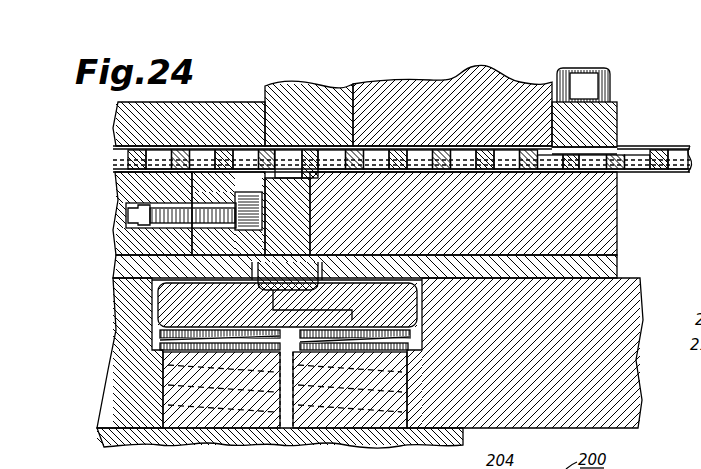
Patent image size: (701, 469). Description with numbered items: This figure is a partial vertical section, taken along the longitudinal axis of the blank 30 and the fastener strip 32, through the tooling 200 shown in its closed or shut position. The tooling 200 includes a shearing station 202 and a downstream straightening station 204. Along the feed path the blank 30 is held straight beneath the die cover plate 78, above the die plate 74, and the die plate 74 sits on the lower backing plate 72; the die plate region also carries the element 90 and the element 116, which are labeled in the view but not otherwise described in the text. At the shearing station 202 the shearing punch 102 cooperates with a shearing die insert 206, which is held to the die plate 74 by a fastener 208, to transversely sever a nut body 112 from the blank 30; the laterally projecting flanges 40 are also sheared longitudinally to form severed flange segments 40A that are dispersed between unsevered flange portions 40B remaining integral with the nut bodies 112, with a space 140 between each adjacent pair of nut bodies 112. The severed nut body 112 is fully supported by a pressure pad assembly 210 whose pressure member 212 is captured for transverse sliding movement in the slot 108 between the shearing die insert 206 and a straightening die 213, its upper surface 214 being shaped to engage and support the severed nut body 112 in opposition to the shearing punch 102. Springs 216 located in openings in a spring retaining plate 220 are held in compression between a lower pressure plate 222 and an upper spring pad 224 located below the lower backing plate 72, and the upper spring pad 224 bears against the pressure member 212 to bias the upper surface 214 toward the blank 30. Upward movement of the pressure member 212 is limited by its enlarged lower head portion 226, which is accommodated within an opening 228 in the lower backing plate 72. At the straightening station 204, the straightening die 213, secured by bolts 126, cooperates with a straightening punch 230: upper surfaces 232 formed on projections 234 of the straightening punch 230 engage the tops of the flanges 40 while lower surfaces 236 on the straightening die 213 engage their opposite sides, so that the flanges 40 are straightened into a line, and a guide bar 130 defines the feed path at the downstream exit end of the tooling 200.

The blank 30 is at (113, 150).
The fastener strip 32 is at (679, 144).
The flanges 40 is at (116, 157).
The severed flange segments 40A is at (411, 148).
The unsevered flange portions 40B is at (426, 174).
The lower backing plate 72 is at (120, 270).
The die plate 74 is at (118, 249).
The die cover plate 78 is at (122, 114).
The pocket 90 is at (175, 164).
The shearing punch 102 is at (312, 90).
The slot 108 is at (192, 174).
The nut bodies 112 is at (508, 150).
The column 116 is at (287, 216).
The bolts 126 is at (603, 68).
The guide bar 130 is at (614, 108).
The space 140 is at (650, 158).
The tooling 200 is at (618, 95).
The shearing station 202 is at (262, 92).
The straightening station 204 is at (412, 80).
The shearing die insert 206 is at (200, 247).
The fastener 208 is at (145, 216).
The pressure pad assembly 210 is at (148, 316).
The pressure member 212 is at (310, 232).
The straightening die 213 is at (605, 235).
The upper surface 214 is at (278, 157).
The springs 216 is at (160, 357).
The spring retaining plate 220 is at (636, 402).
The lower pressure plate 222 is at (112, 436).
The upper spring pad 224 is at (163, 300).
The enlarged lower head portion 226 is at (287, 305).
The opening 228 is at (312, 288).
The straightening punch 230 is at (493, 78).
The upper surfaces 232 is at (446, 175).
The projections 234 is at (543, 176).
The lower surfaces 236 is at (499, 178).